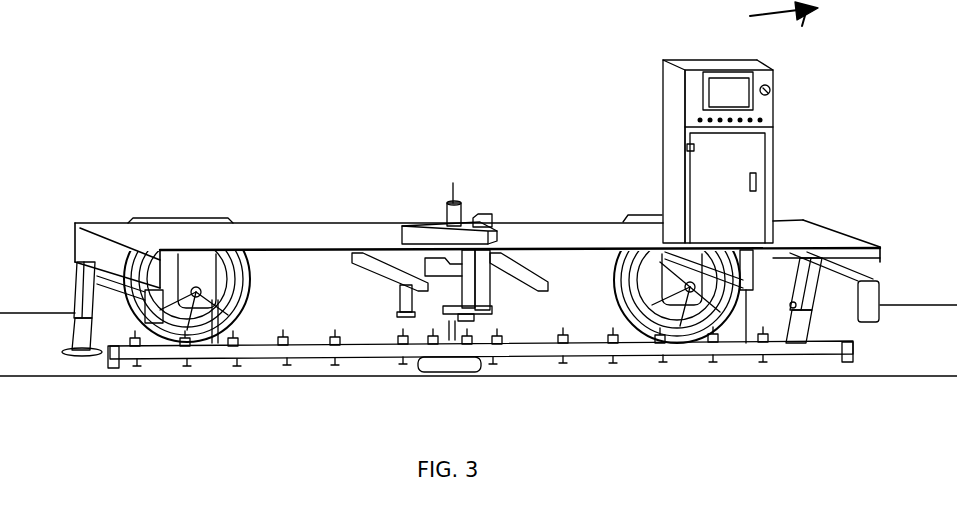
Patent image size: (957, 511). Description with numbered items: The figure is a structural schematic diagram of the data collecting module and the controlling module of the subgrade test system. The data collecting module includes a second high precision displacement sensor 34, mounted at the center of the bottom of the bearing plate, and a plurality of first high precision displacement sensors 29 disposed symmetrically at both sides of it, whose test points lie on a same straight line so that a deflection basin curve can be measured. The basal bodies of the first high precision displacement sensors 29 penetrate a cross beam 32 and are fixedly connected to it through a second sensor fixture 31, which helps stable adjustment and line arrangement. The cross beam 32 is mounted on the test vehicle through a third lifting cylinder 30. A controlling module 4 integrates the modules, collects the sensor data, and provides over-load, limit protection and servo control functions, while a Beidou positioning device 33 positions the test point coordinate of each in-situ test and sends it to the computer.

The controlling module 4 is at (674, 88).
The first high precision displacement sensor 29 is at (245, 334).
The third lifting cylinder 30 is at (213, 262).
The second sensor fixture 31 is at (285, 341).
The cross beam 32 is at (317, 355).
The Beidou positioning device 33 is at (764, 18).
The second high precision displacement sensor 34 is at (458, 373).